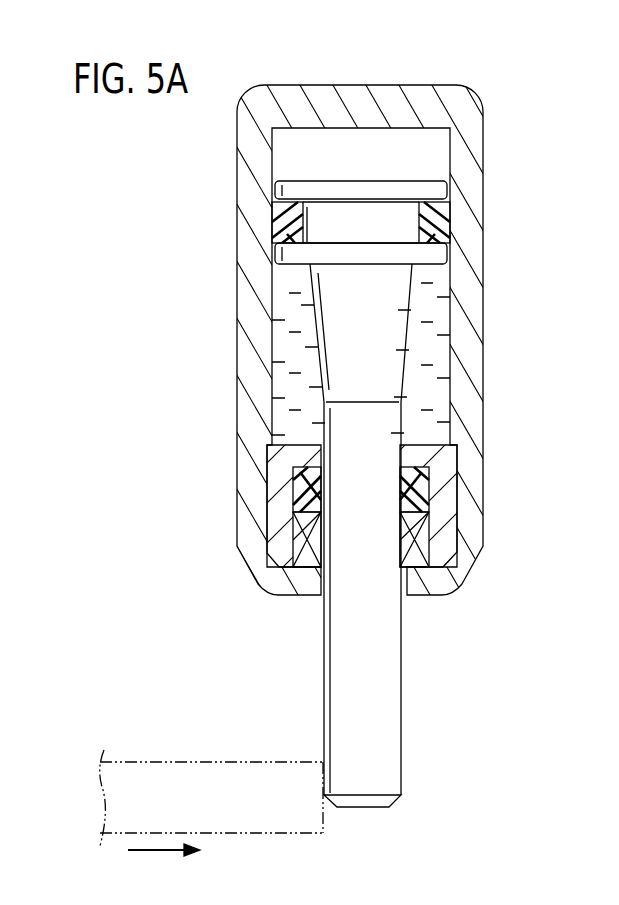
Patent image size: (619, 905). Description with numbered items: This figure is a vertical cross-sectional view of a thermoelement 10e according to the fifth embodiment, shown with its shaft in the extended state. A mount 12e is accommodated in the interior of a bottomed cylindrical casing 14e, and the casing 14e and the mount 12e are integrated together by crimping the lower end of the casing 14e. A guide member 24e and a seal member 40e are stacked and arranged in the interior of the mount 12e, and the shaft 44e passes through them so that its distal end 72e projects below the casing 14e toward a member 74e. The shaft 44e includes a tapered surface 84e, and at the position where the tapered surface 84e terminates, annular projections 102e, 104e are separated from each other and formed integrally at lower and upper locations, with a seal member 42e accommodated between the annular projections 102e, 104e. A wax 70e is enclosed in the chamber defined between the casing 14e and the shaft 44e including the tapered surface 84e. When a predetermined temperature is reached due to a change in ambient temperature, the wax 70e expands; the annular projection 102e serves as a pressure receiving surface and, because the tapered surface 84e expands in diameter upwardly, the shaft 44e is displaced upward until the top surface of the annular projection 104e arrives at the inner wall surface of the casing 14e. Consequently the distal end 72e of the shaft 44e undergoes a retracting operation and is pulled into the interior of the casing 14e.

The thermoelement 10e is at (490, 363).
The casing 14e is at (387, 95).
The annular projection 104e is at (415, 187).
The seal member 42e is at (274, 214).
The annular projection 102e is at (432, 253).
The wax 70e is at (287, 346).
The tapered surface 84e is at (408, 338).
The mount 12e is at (275, 500).
The seal member 40e is at (422, 492).
The guide member 24e is at (422, 535).
The shaft 44e is at (382, 648).
The distal end 72e is at (372, 802).
The mating member 74e is at (202, 773).